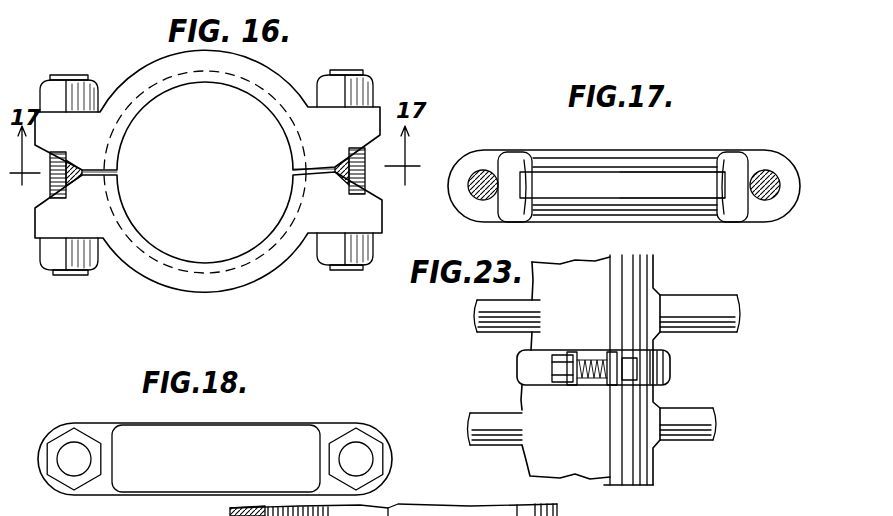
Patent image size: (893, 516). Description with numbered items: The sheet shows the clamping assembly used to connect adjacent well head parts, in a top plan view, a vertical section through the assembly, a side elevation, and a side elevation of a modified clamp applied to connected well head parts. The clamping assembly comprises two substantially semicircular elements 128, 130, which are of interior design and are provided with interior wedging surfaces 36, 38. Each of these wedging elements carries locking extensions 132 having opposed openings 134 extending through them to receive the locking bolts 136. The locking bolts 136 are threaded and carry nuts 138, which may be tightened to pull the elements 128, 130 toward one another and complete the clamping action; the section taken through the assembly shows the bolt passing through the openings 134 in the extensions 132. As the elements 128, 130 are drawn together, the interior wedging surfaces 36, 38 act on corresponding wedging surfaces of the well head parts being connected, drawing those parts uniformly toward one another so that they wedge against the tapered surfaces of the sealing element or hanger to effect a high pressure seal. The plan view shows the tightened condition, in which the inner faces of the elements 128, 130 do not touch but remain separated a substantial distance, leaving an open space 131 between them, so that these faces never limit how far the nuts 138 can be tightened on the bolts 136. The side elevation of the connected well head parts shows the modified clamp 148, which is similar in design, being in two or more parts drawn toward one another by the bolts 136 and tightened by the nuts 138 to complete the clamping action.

In FIG. 16, the semicircular element 128 is at (265, 80).
In FIG. 16, the semicircular element 130 is at (200, 290).
In FIG. 18, the semicircular element 130 is at (272, 432).
In FIG. 16, the open space 131 is at (315, 171).
In FIG. 16, the locking extension 132 is at (332, 167).
In FIG. 17, the locking extension 132 is at (772, 206).
In FIG. 17, the opening 134 is at (481, 170).
In FIG. 16, the locking bolt 136 is at (50, 184).
In FIG. 17, the locking bolt 136 is at (493, 170).
In FIG. 18, the locking bolt 136 is at (362, 459).
In FIG. 23, the locking bolt 136 is at (594, 388).
In FIG. 16, the nut 138 is at (87, 83).
In FIG. 18, the nut 138 is at (357, 430).
In FIG. 23, the nut 138 is at (553, 366).
In FIG. 23, the clamp 148 is at (668, 367).
In FIG. 17, the interior wedging surface 36 is at (529, 172).
In FIG. 17, the interior wedging surface 38 is at (672, 187).